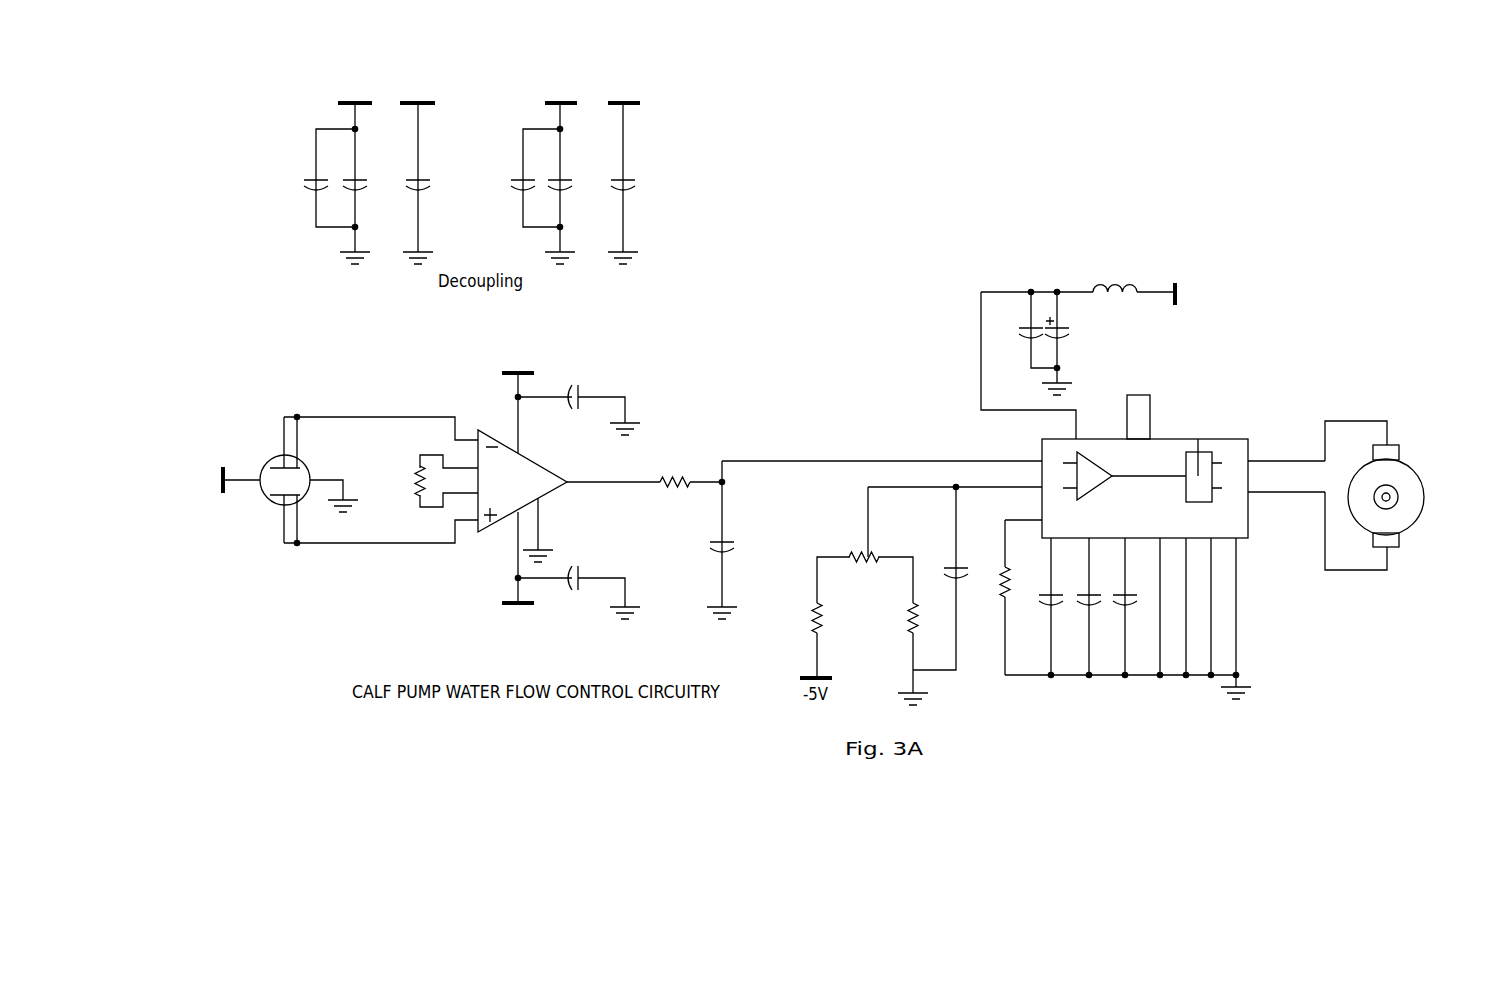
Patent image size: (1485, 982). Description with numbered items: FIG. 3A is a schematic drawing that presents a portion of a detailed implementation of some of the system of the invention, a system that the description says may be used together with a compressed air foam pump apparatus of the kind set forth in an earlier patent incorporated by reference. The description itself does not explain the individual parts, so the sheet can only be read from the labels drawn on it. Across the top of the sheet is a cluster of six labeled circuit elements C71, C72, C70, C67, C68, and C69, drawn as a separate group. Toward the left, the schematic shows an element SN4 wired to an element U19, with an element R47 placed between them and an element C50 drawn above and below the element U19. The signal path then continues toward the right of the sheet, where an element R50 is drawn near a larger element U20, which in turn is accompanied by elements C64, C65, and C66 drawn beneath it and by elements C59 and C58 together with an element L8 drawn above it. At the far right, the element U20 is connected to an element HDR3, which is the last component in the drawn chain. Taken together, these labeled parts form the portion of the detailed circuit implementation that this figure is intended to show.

The decoupling capacitor .1uF C71 is at (318, 178).
The decoupling capacitor .1uF C72 is at (361, 171).
The decoupling capacitor .1uF C70 is at (425, 171).
The decoupling capacitor .1uF C67 is at (524, 178).
The decoupling capacitor .1uF C68 is at (569, 171).
The decoupling capacitor .1uF C69 is at (634, 171).
The pressure sensor SN4 is at (332, 492).
The gain resistor 470 R47 is at (428, 481).
The AD620 instrumentation amplifier U19 is at (521, 488).
The supply capacitor 10uF C50 is at (577, 487).
The resistor 15K R50 is at (1021, 597).
The inductor 100uH L8 is at (1138, 284).
The capacitor .1uF C59 is at (1019, 328).
The capacitor 100uF C58 is at (1074, 342).
The MC33030 servo/controller driver U20 is at (1153, 495).
The capacitor 1uF C64 is at (1059, 599).
The capacitor 1uF C65 is at (1097, 599).
The capacitor 1uF C66 is at (1133, 599).
The DC motor/valve servo header HDR3 is at (1384, 534).